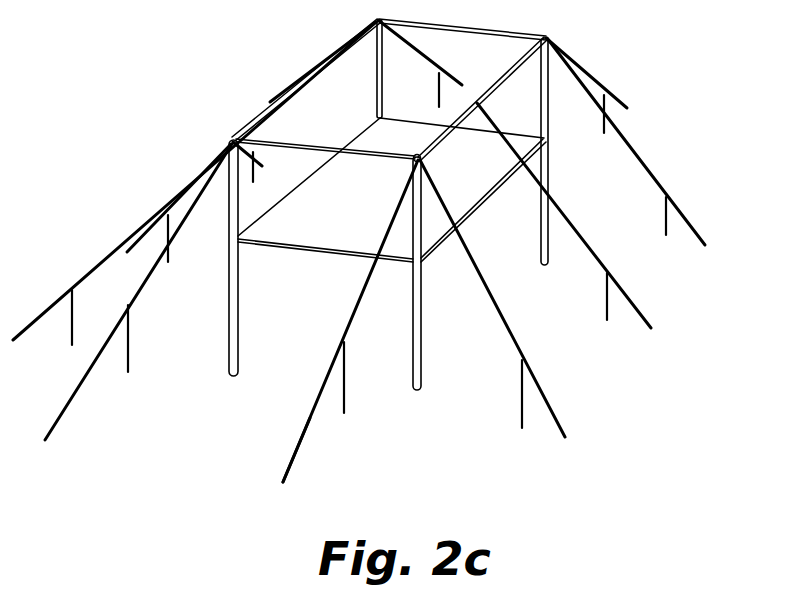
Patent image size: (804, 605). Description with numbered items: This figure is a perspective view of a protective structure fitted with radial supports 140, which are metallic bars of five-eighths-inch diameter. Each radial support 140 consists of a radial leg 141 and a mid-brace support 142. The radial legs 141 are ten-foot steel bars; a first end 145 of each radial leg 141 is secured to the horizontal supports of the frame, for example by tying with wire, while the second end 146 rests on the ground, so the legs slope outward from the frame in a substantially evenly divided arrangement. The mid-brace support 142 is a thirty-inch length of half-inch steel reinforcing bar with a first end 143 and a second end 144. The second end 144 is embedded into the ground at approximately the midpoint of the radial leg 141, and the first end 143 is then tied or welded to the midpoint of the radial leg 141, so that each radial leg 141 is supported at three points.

The radial support 140 is at (397, 258).
The radial leg 141 is at (569, 219).
The mid-brace support 142 is at (347, 378).
The first end 143 is at (314, 396).
The second end 144 is at (293, 428).
The first end 145 is at (628, 143).
The second end 146 is at (665, 177).